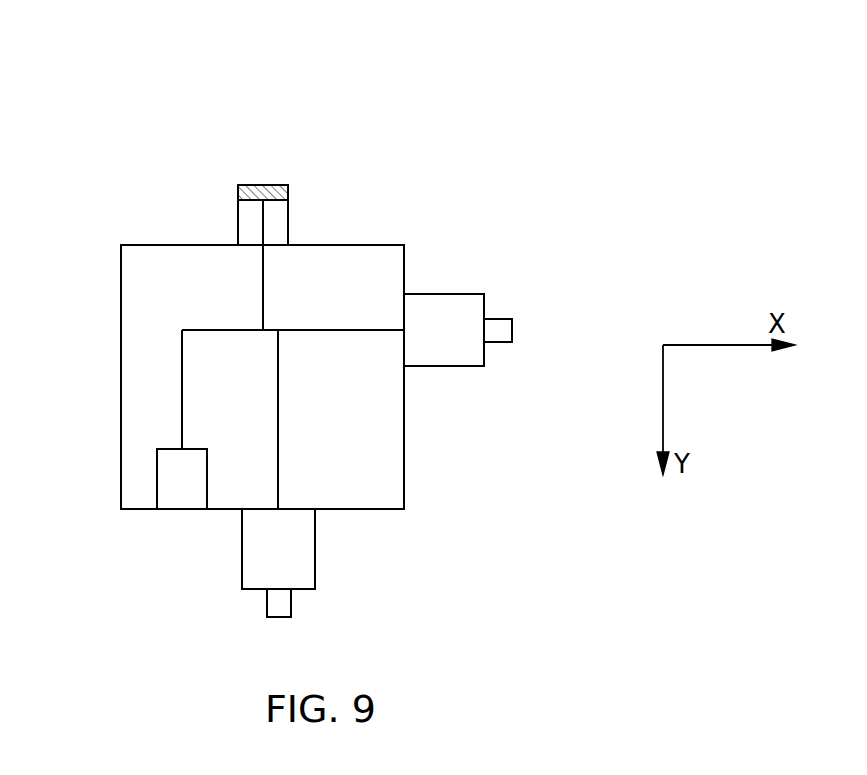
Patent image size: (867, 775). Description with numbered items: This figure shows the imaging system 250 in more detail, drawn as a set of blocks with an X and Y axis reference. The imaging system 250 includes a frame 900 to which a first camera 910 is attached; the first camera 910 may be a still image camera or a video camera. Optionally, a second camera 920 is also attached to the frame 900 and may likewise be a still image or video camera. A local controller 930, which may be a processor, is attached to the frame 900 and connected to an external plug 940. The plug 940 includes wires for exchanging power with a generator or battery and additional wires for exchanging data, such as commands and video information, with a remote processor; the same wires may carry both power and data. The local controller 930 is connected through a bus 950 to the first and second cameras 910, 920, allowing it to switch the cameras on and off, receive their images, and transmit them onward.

The imaging system 250 is at (355, 60).
The frame 900 is at (121, 377).
The first camera 910 is at (315, 548).
The second camera 920 is at (444, 294).
The local controller 930 is at (182, 490).
The external plug 940 is at (310, 188).
The bus 950 is at (355, 330).